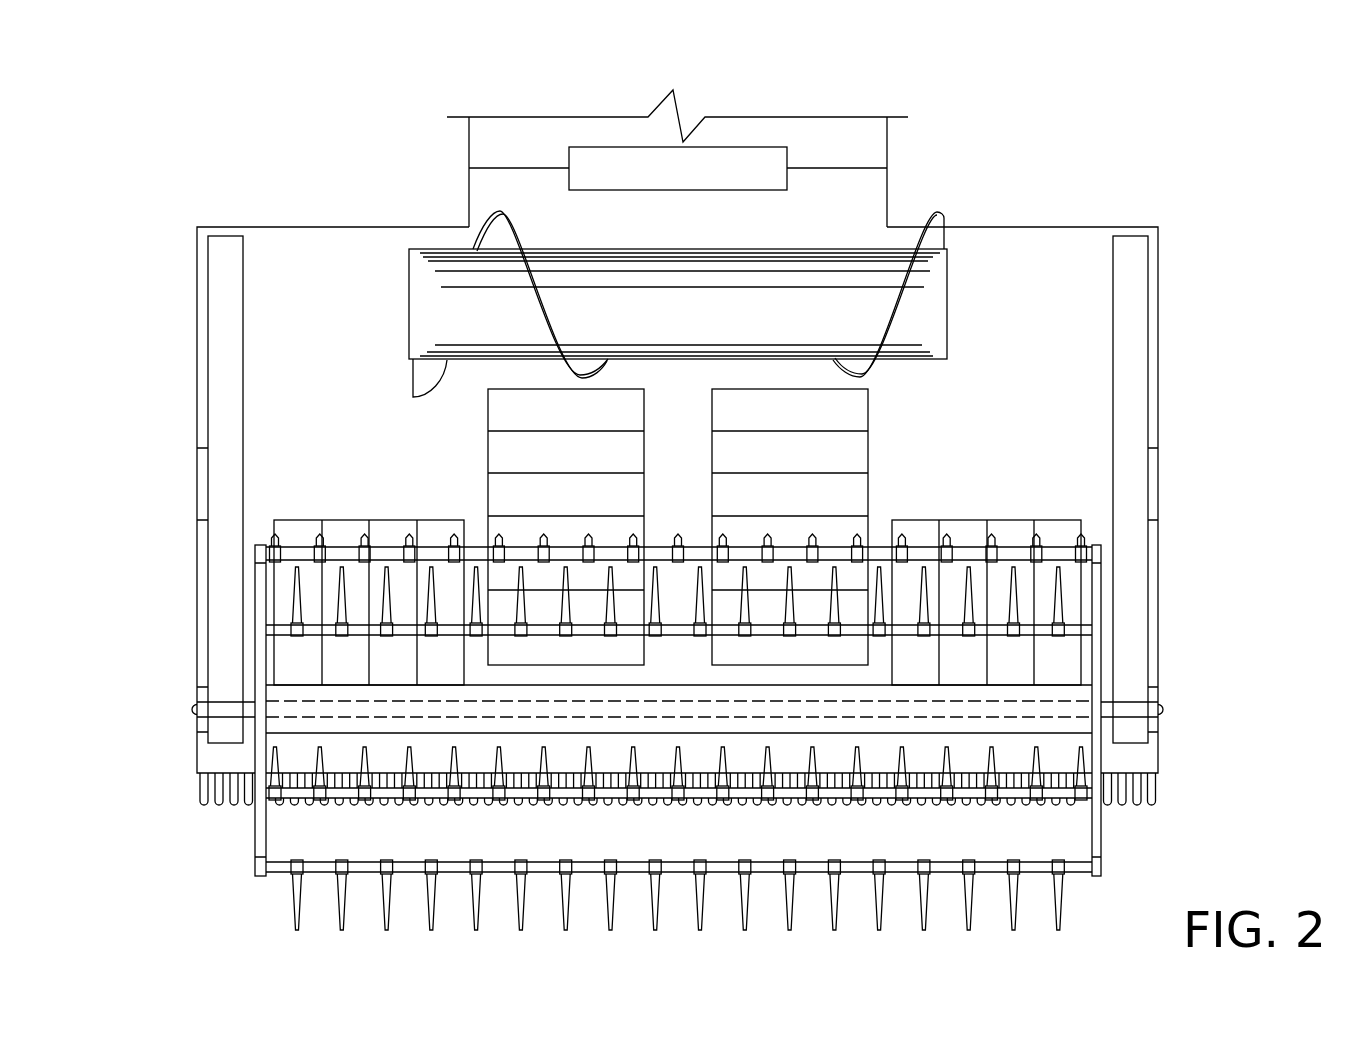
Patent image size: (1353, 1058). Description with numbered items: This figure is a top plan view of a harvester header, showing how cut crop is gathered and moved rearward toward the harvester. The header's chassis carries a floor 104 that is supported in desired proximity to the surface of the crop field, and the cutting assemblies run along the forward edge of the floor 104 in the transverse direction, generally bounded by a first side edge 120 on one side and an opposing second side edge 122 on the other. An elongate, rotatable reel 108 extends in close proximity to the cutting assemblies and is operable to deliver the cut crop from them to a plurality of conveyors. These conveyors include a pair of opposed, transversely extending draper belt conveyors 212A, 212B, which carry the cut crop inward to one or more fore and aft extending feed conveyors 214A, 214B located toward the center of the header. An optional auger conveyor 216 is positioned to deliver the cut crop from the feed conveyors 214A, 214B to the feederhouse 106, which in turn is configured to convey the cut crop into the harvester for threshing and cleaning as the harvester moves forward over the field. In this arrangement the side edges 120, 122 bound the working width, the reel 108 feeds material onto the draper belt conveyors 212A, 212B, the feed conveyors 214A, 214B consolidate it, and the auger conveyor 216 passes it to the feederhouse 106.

The floor 104 is at (227, 760).
The feederhouse 106 is at (748, 162).
The reel 108 is at (1103, 832).
The first side edge 120 is at (197, 403).
The second side edge 122 is at (1158, 347).
The draper belt conveyor 212A is at (380, 520).
The draper belt conveyor 212B is at (962, 520).
The feed conveyor 214A is at (487, 456).
The feed conveyor 214B is at (867, 422).
The auger conveyor 216 is at (820, 297).